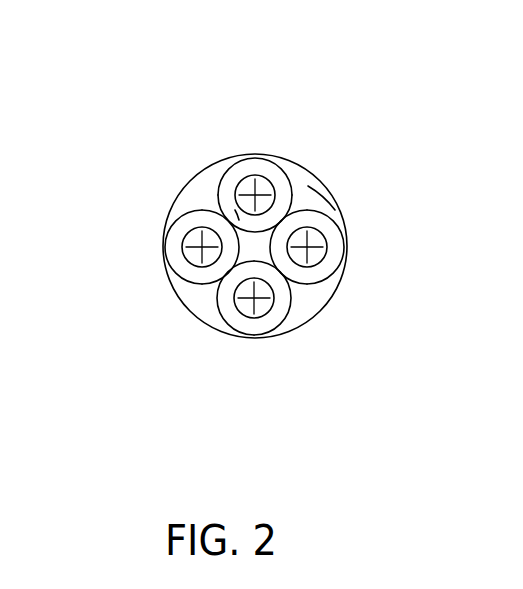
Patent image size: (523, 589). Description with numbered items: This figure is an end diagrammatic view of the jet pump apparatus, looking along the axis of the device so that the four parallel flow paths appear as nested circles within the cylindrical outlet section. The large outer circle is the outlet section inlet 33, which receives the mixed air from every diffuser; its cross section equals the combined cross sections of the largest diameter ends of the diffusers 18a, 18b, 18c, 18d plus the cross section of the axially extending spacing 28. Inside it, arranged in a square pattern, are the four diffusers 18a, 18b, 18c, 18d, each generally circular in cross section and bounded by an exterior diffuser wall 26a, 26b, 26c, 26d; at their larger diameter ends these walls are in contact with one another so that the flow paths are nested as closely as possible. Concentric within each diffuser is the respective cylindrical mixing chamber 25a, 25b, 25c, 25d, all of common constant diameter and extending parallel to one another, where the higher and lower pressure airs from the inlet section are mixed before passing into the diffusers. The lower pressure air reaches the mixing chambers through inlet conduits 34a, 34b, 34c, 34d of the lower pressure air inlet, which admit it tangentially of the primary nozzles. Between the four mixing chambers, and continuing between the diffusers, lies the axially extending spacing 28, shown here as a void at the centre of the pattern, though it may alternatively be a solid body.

The diffuser 18a is at (278, 129).
The diffuser 18b is at (381, 283).
The diffuser 18c is at (253, 349).
The diffuser 18d is at (130, 217).
The mixing chamber 25a is at (263, 173).
The mixing chamber 25b is at (318, 232).
The mixing chamber 25c is at (265, 317).
The mixing chamber 25d is at (88, 186).
The inlet conduit 34a is at (257, 163).
The inlet conduit 34b is at (335, 247).
The inlet conduit 34c is at (280, 307).
The inlet conduit 34d is at (172, 250).
The exterior diffuser wall 26a is at (237, 161).
The exterior diffuser wall 26b is at (345, 265).
The exterior diffuser wall 26c is at (234, 335).
The exterior diffuser wall 26d is at (167, 268).
The outlet section inlet 33 is at (320, 197).
The axially extending spacing 28 is at (243, 252).